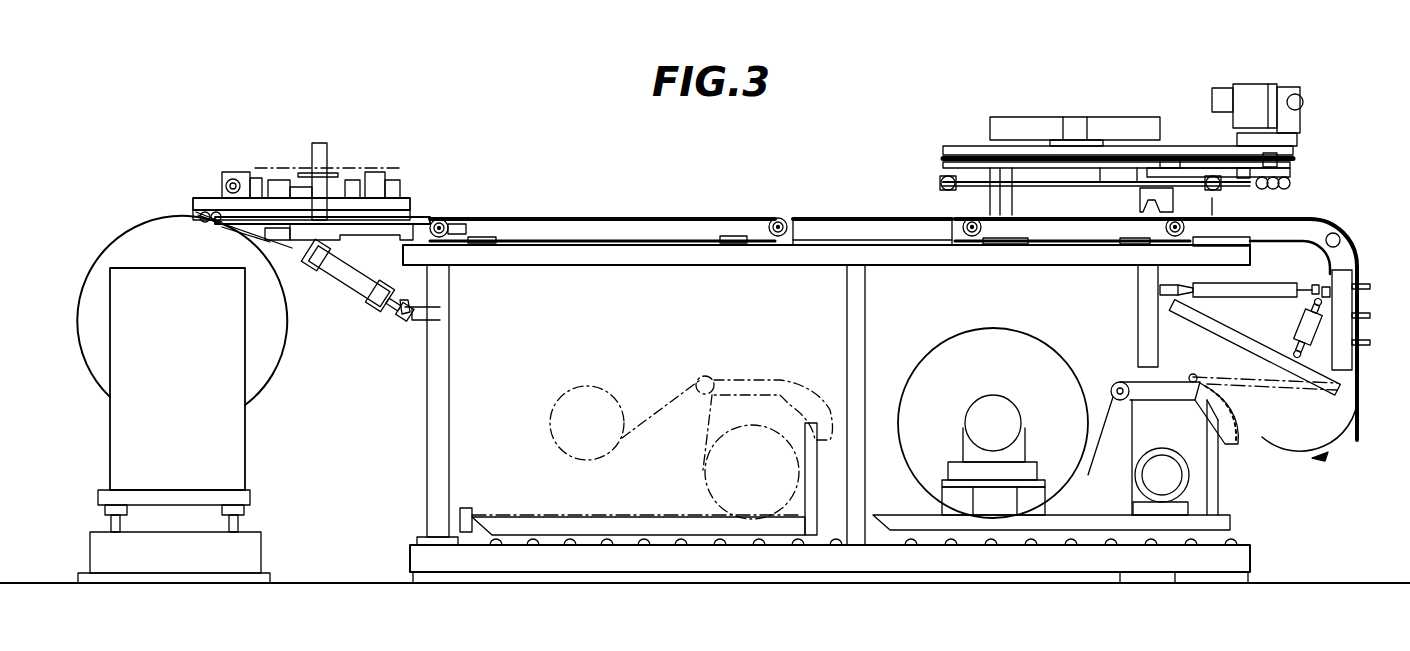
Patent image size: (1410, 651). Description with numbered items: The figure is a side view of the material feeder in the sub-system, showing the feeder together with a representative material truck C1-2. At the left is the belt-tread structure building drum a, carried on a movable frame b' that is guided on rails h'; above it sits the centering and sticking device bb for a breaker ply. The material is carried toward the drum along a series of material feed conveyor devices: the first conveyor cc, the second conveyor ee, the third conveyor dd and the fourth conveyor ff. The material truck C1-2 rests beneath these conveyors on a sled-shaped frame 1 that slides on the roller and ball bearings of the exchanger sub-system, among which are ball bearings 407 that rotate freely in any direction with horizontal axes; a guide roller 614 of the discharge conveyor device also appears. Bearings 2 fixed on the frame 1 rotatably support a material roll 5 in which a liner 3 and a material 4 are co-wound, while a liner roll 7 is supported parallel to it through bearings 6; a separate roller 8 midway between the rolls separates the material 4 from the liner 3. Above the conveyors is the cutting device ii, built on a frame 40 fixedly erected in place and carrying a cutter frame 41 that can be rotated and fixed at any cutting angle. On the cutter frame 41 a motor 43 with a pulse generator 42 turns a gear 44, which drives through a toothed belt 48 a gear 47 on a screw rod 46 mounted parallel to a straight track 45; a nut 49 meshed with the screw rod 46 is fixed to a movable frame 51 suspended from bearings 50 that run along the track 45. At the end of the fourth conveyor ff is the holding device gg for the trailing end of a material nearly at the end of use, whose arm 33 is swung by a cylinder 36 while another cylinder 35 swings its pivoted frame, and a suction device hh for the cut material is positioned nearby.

The sled-shaped frame 1 is at (1230, 524).
The bearings 2 is at (1023, 423).
The liner 3 is at (1135, 426).
The material 4 is at (1264, 430).
The material roll 5 is at (946, 334).
The bearings 6 is at (1175, 462).
The liner roll 7 is at (1172, 452).
The separate roller 8 is at (1118, 401).
The arm 33 is at (1206, 312).
The cylinder 35 is at (1272, 283).
The cylinder 36 is at (1300, 328).
The frame 40 is at (1022, 117).
The cutter frame 41 is at (971, 146).
The pulse generator 42 is at (1224, 88).
The motor 43 is at (1266, 84).
The gear 44 is at (1302, 102).
The straight track 45 is at (1097, 168).
The screw rod 46 is at (950, 191).
The gear 47 is at (1290, 186).
The toothed belt 48 is at (1300, 131).
The nut 49 is at (1222, 190).
The bearings 50 is at (1168, 160).
The movable frame 51 is at (1192, 160).
The ball bearings 407 is at (1248, 545).
The guide roller 614 is at (467, 506).
The belt-tread structure building drum a is at (282, 347).
The movable frame b' is at (204, 379).
The rails h' is at (186, 536).
The centering and sticking device bb is at (340, 170).
The material feed conveyor device cc is at (586, 212).
The material feed conveyor device dd is at (1060, 213).
The material feed conveyor device ee is at (862, 210).
The material feed conveyor device ff is at (1320, 216).
The holding device gg is at (1372, 327).
The suction device hh is at (1232, 345).
The cutting device ii is at (1104, 108).
The material truck C1-2 is at (1062, 352).